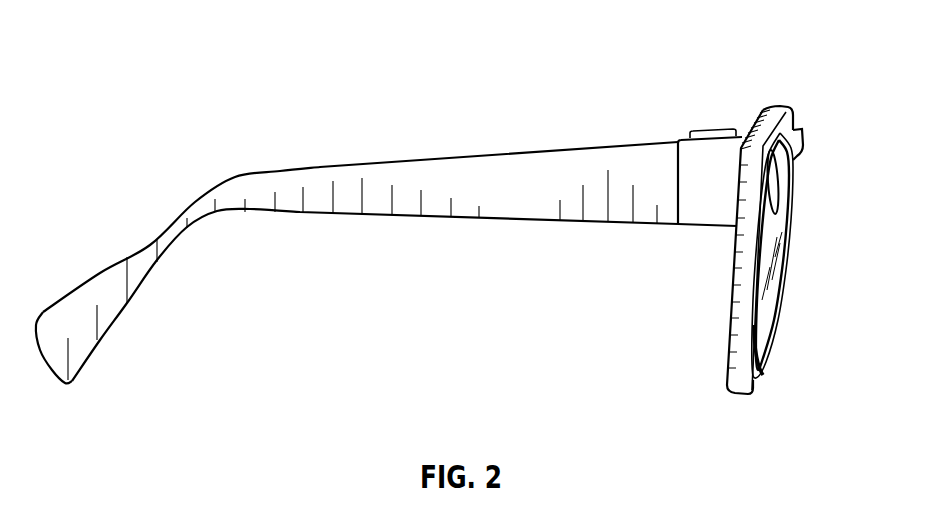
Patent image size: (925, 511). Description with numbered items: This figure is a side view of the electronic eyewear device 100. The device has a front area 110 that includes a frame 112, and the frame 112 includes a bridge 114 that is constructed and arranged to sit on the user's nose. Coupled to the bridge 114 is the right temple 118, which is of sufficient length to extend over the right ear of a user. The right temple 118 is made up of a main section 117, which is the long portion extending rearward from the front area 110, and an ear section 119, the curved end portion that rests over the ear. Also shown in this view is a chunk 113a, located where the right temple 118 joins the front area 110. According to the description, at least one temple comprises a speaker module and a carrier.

The electronic eyewear device 100 is at (182, 50).
The front area 110 is at (687, 311).
The frame 112 is at (776, 110).
The chunk 113a is at (700, 216).
The bridge 114 is at (800, 141).
The main section 117 is at (603, 149).
The right temple 118 is at (393, 170).
The ear section 119 is at (220, 183).